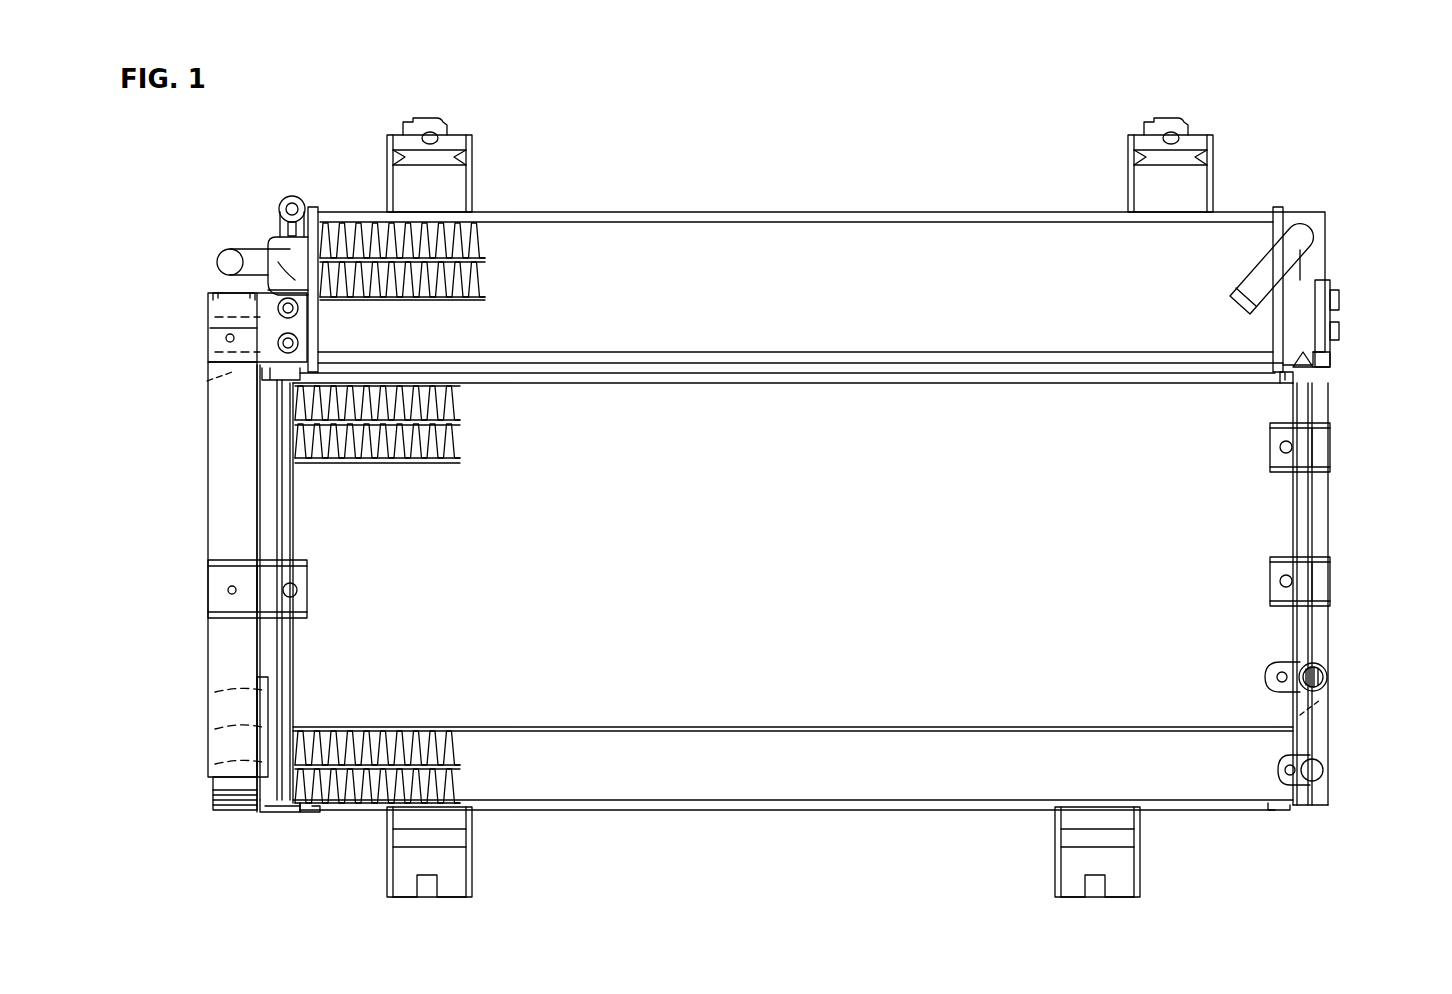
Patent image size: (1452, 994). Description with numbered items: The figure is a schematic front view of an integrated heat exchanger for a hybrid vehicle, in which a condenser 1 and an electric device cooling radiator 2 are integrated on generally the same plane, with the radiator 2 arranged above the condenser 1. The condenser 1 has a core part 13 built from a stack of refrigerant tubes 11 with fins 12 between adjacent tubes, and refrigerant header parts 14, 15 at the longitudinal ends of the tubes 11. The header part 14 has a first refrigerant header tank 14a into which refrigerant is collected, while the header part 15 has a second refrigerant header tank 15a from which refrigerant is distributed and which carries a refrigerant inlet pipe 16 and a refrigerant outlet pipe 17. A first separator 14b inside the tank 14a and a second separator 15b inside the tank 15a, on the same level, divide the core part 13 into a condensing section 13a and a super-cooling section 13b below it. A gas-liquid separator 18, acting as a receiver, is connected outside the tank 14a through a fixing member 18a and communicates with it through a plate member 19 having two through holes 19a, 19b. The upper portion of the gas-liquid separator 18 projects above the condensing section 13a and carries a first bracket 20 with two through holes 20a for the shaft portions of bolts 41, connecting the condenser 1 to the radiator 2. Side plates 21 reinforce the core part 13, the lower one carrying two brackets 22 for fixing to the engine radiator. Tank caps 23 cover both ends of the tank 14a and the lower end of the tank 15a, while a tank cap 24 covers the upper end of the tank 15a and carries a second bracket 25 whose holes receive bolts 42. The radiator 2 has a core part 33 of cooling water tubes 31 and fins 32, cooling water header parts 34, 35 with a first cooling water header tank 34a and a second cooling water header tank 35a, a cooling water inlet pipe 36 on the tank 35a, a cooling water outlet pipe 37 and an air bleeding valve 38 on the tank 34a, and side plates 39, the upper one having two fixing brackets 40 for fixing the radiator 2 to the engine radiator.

The condenser 1 is at (617, 812).
The electric device cooling radiator 2 is at (589, 210).
The refrigerant tubes 11 is at (313, 462).
The fins 12 is at (300, 395).
The core part 13 is at (850, 822).
The condensing section 13a is at (752, 598).
The super-cooling section 13b is at (735, 748).
The refrigerant header part 14 is at (256, 548).
The first refrigerant header tank 14a is at (268, 522).
The first separator 14b is at (276, 810).
The refrigerant header part 15 is at (1329, 522).
The second refrigerant header tank 15a is at (1316, 544).
The second separator 15b is at (1320, 706).
The refrigerant inlet pipe 16 is at (1320, 667).
The refrigerant outlet pipe 17 is at (1320, 757).
The gas-liquid separator 18 is at (230, 652).
The fixing member 18a is at (238, 607).
The plate member 19 is at (212, 727).
The first through hole 19a is at (212, 691).
The second through hole 19b is at (212, 770).
The first bracket 20 is at (268, 328).
The through holes 20a is at (213, 310).
The side plates 21 is at (1232, 378).
The brackets 22 is at (472, 882).
The tank caps 23 is at (290, 376).
The tank cap 24 is at (1326, 378).
The second bracket 25 is at (1324, 356).
The cooling water tubes 31 is at (278, 250).
The fins 32 is at (352, 235).
The core part 33 is at (775, 272).
The cooling water header part 34 is at (262, 245).
The first cooling water header tank 34a is at (292, 270).
The cooling water header part 35 is at (1328, 214).
The second cooling water header tank 35a is at (1318, 262).
The cooling water inlet pipe 36 is at (1301, 236).
The cooling water outlet pipe 37 is at (232, 262).
The air bleeding valve 38 is at (289, 198).
The side plates 39 is at (1015, 358).
The fixing brackets 40 is at (466, 146).
The bolts 41 is at (280, 345).
The bolts 42 is at (1340, 329).